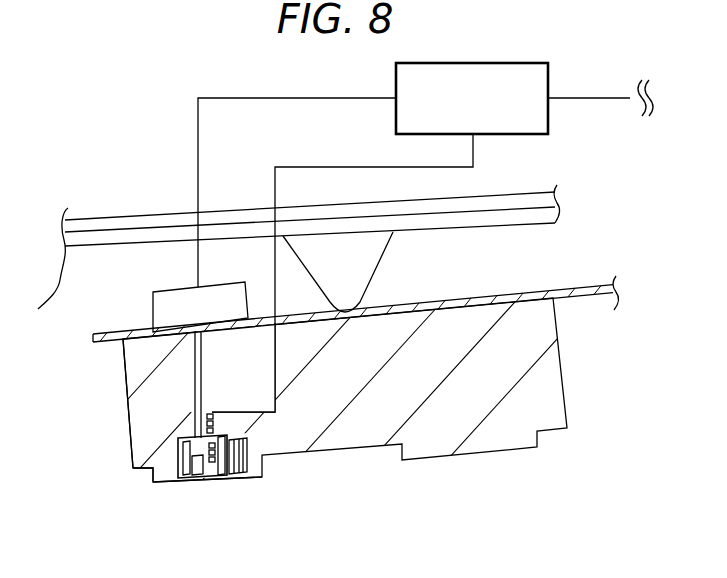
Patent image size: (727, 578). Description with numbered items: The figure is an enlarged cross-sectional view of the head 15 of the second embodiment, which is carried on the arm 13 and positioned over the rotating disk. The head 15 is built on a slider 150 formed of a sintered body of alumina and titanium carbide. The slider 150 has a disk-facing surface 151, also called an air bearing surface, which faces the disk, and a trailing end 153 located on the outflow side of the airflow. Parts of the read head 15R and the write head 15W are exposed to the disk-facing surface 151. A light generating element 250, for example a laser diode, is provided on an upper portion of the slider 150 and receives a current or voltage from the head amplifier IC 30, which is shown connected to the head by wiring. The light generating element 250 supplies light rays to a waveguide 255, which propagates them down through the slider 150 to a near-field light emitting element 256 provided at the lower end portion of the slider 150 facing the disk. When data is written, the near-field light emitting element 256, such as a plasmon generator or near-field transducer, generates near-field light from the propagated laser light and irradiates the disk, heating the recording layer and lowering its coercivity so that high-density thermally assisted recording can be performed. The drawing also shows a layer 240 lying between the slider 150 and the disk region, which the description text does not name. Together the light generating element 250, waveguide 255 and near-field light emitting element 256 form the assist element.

The arm 13 is at (108, 218).
The head 15 is at (331, 393).
The read head 15R is at (253, 480).
The write head 15W is at (165, 460).
The head amplifier IC 30 is at (548, 116).
The slider 150 is at (292, 452).
The disk-facing surface 151 is at (162, 484).
The trailing end 153 is at (123, 370).
The protective film 240 is at (599, 285).
The light generating element 250 is at (165, 302).
The waveguide 255 is at (190, 398).
The near-field light emitting element 256 is at (200, 480).